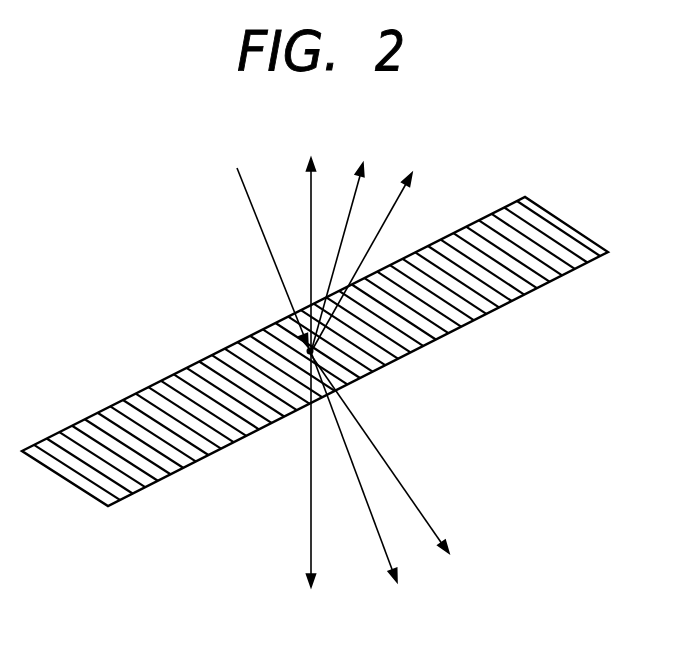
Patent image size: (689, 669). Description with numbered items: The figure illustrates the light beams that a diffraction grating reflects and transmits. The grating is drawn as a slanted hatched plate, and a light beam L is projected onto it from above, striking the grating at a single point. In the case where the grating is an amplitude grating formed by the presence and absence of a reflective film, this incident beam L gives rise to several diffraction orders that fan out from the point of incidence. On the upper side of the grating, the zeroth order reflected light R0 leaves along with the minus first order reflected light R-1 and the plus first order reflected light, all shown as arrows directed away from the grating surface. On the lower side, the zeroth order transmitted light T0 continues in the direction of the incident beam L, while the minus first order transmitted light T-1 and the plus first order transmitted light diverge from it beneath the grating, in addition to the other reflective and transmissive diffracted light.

The light beam L is at (268, 242).
The minus first order reflected light R-1 is at (304, 237).
The 0-th order reflected light R0 is at (351, 241).
The minus 1st order transmitted light T-1 is at (309, 490).
The 0-th order transmitted light T0 is at (366, 489).